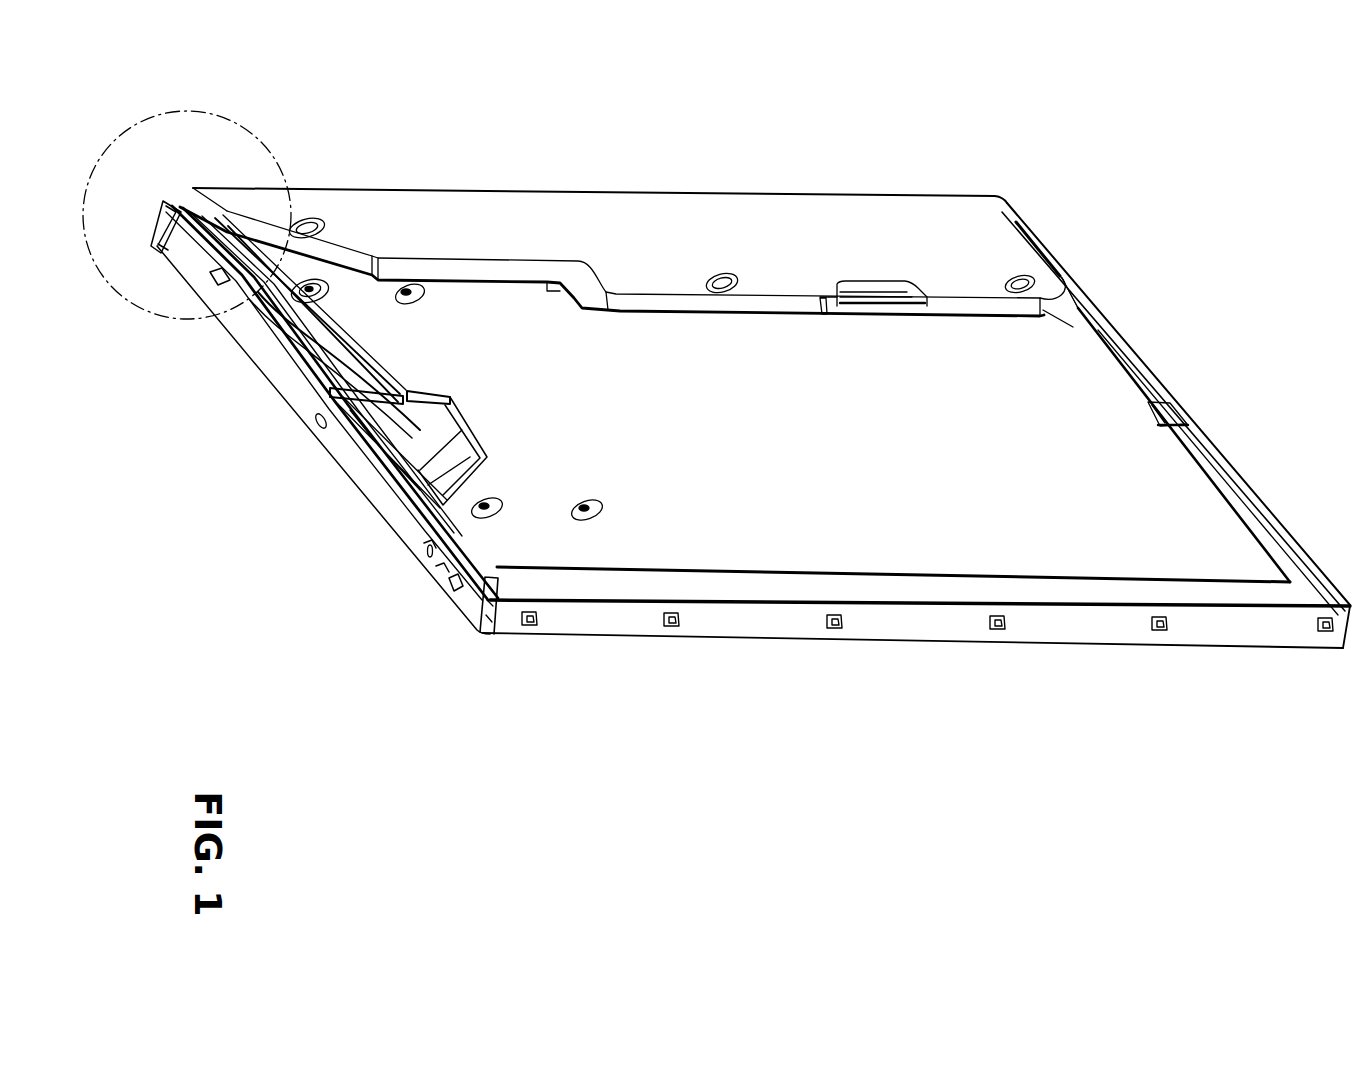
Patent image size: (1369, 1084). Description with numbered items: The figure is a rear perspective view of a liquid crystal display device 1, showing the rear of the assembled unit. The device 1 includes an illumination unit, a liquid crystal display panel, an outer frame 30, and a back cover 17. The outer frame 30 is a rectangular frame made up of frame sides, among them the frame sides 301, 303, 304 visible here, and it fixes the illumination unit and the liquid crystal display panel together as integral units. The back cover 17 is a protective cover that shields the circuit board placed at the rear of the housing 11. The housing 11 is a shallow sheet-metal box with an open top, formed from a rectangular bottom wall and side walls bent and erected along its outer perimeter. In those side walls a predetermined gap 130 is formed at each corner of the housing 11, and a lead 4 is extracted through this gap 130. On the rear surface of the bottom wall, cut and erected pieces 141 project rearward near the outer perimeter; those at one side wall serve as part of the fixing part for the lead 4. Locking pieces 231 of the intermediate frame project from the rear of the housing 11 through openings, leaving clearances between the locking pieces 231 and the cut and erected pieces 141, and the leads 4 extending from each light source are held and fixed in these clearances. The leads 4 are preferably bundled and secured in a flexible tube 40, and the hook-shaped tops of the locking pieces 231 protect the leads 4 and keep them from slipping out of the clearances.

The liquid crystal display device 1 is at (1083, 235).
The lead 4 is at (362, 345).
The housing 11 is at (1095, 417).
The back cover 17 is at (878, 216).
The outer frame 30 is at (1110, 634).
The frame side 301 is at (918, 622).
The frame side 303 is at (1220, 447).
The frame side 304 is at (352, 458).
The gap 130 is at (478, 620).
The cut and erected piece 141 is at (292, 288).
The tube 40 is at (328, 297).
The locking piece 231 is at (440, 572).